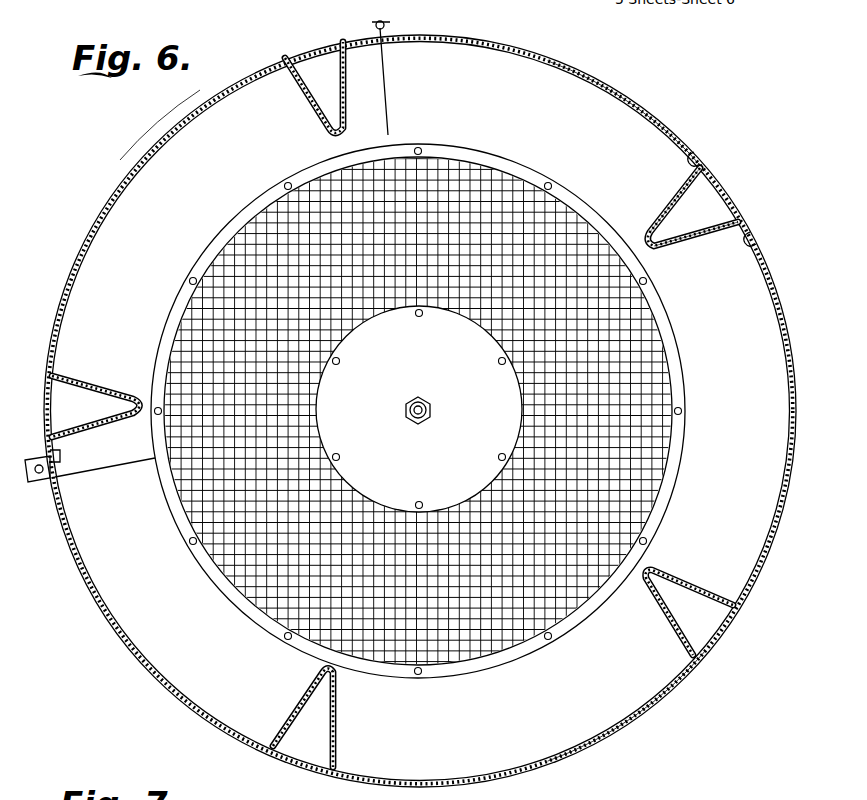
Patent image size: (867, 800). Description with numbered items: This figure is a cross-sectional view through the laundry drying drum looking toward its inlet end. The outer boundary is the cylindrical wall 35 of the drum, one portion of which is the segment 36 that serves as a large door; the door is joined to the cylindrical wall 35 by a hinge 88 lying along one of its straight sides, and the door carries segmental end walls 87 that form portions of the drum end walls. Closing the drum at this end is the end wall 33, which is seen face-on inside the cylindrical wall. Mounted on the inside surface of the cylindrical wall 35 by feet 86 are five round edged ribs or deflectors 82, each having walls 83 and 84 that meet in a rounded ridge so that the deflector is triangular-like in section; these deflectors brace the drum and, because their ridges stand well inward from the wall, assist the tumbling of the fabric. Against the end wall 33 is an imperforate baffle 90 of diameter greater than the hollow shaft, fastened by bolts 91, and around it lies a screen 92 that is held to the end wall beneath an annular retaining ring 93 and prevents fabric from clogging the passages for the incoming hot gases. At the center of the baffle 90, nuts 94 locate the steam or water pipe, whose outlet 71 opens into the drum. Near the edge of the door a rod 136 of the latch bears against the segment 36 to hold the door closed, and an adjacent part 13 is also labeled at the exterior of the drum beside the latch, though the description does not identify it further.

The mounting bracket 13 is at (46, 456).
The end wall 33 is at (612, 118).
The cylindrical wall 35 is at (592, 750).
The segment 36 is at (118, 188).
The outlet 71 is at (413, 423).
The deflectors 82 is at (692, 250).
The wall 83 is at (670, 206).
The wall 84 is at (722, 232).
The feet 86 is at (692, 151).
The segmental end walls 87 is at (167, 142).
The hinge 88 is at (384, 23).
The imperforate baffle 90 is at (481, 421).
The bolts 91 is at (416, 314).
The screen 92 is at (500, 326).
The annular retaining ring 93 is at (682, 388).
The nuts 94 is at (424, 424).
The rod 136 is at (42, 482).